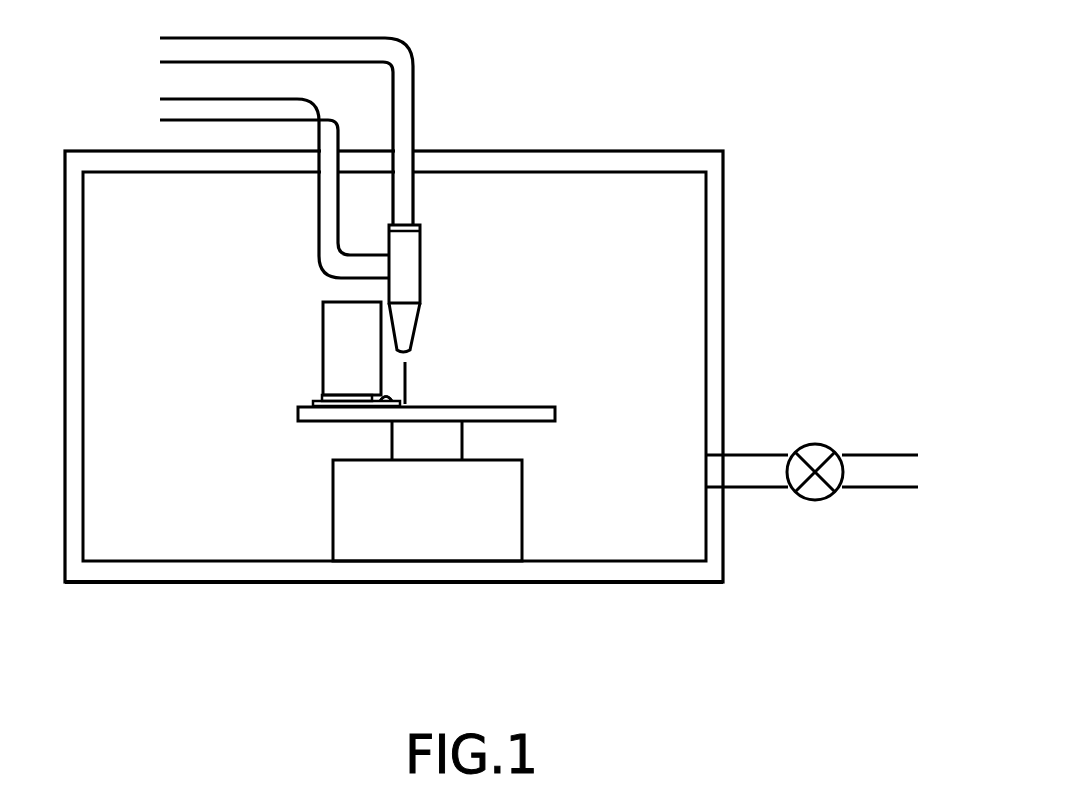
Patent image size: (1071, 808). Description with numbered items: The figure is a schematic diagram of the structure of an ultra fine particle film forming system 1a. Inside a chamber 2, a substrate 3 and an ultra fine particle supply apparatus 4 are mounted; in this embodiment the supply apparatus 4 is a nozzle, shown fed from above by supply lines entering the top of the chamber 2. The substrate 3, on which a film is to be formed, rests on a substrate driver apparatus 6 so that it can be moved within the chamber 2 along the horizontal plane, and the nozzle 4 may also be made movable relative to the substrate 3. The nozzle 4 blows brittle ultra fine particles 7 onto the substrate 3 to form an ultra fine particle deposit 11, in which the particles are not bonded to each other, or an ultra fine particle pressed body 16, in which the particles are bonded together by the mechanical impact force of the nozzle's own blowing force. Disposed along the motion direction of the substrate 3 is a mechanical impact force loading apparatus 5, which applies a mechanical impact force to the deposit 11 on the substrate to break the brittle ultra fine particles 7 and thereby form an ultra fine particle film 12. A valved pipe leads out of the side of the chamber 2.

The ultra fine particle film forming system 1a is at (442, 125).
The chamber 2 is at (532, 153).
The substrate 3 is at (522, 407).
The ultra fine particle supply apparatus 4 is at (420, 283).
The mechanical impact force loading apparatus 5 is at (323, 315).
The substrate driver apparatus 6 is at (462, 437).
The brittle ultra fine particles 7 is at (406, 383).
The ultra fine particle deposit 11 is at (387, 394).
The ultra fine particle film 12 is at (315, 402).
The ultra fine particle pressed body 16 is at (305, 478).